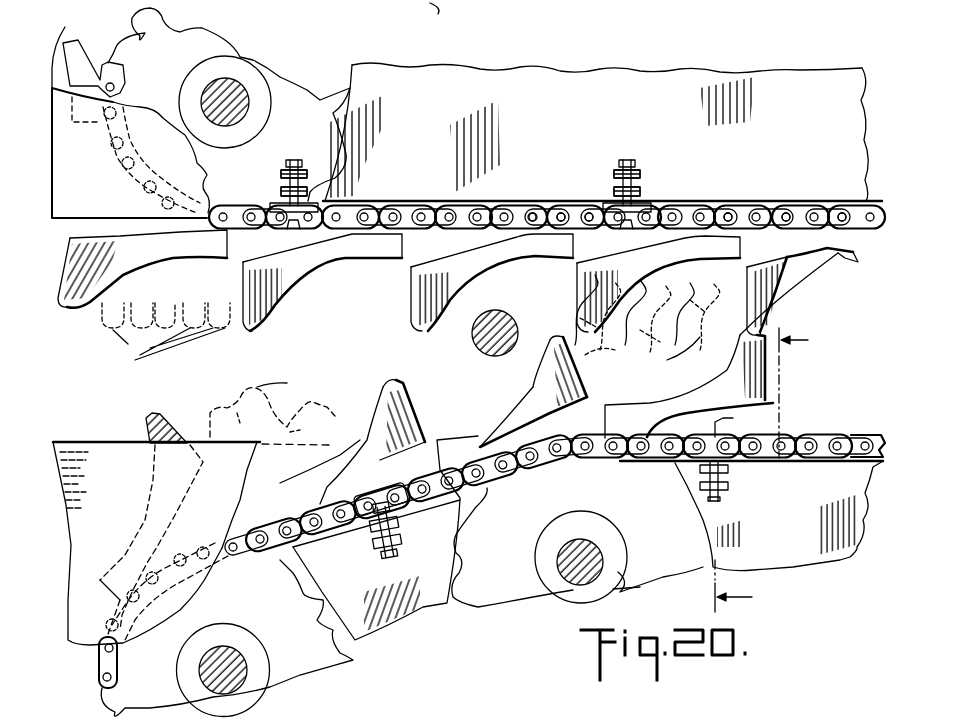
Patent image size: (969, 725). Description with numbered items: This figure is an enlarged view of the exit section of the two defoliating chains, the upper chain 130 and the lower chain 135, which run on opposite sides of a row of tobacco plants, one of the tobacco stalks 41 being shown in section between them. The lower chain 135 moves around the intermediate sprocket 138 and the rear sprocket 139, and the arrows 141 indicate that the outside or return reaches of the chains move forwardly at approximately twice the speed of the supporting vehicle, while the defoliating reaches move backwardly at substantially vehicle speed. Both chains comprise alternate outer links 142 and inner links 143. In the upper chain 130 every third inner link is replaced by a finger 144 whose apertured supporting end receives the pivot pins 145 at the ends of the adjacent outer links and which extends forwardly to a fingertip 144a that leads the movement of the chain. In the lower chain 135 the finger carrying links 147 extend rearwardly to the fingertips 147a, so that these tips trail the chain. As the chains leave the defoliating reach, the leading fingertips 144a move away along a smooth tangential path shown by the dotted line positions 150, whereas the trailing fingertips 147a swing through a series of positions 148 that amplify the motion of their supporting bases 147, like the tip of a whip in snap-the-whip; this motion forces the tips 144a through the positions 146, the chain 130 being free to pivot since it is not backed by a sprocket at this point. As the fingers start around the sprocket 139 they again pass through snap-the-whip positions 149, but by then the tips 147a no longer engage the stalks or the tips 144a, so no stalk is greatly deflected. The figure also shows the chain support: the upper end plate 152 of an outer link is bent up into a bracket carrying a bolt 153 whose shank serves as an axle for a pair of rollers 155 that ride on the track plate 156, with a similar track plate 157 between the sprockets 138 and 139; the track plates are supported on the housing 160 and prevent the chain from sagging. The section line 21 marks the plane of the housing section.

The chain 130 is at (886, 201).
The chain 135 is at (893, 458).
The intermediate sprocket 138 is at (503, 590).
The rear sprocket 139 is at (270, 1).
The arrows 141 is at (412, 8).
The outer links 142 is at (838, 212).
The inner links 143 is at (771, 212).
The finger 144 is at (550, 210).
The fingertip 144a is at (412, 318).
The pivot pins 145 is at (535, 212).
The positions 146 is at (653, 300).
The finger carrying links 147 is at (453, 446).
The fingertip 147a is at (394, 382).
The dotted line positions 148 is at (672, 352).
The snap-the-whip positions 149 is at (267, 403).
The dotted line positions 150 is at (161, 338).
The end plate 152 is at (293, 232).
The bolt 153 is at (297, 160).
The rollers 155 is at (280, 190).
The track plate 156 is at (425, 48).
The track plate 157 is at (400, 620).
The housing 160 is at (65, 27).
The tobacco stalks 41 is at (485, 346).
The section line 21 is at (774, 470).